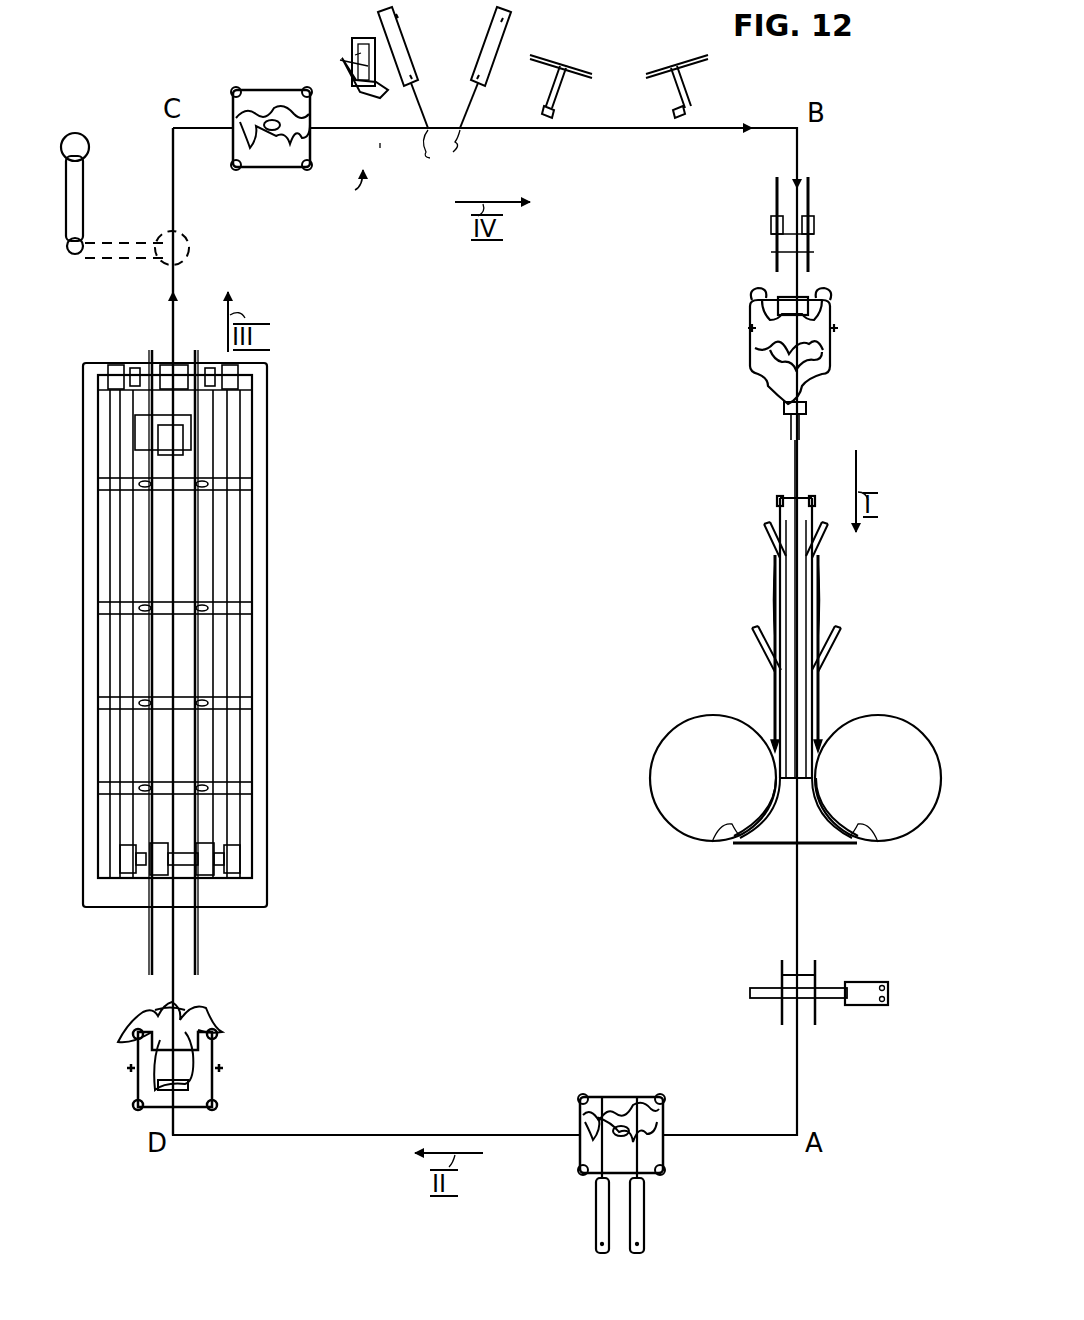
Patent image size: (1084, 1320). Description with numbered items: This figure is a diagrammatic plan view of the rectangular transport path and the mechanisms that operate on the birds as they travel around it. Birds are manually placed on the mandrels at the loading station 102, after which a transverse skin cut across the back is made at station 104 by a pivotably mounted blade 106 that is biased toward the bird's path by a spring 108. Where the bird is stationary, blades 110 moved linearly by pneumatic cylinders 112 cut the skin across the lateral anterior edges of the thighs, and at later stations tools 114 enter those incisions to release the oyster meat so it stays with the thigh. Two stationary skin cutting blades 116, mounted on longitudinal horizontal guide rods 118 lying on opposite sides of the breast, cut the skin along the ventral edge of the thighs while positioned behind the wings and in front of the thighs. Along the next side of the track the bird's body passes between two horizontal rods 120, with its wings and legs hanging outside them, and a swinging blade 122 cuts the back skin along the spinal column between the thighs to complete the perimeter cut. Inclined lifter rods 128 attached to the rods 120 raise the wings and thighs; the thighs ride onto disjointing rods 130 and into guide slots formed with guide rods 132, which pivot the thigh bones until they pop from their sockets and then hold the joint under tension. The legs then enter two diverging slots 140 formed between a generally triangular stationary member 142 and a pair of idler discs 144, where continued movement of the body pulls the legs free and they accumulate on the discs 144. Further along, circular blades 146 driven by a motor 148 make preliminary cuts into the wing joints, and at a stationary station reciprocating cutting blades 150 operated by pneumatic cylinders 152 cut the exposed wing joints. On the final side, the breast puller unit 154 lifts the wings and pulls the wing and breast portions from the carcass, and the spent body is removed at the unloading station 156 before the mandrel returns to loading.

The loading station 102 is at (248, 75).
The skin cutting station 104 is at (355, 174).
The pivotably mounted blade 106 is at (380, 100).
The spring 108 is at (356, 75).
The blades 110 is at (432, 158).
The pneumatic cylinders 112 is at (495, 32).
The tools 114 is at (550, 118).
The stationary skin cutting blades 116 is at (772, 224).
The longitudinal horizontal guide rods 118 is at (772, 251).
The horizontal rods 120 is at (781, 506).
The blade 122 is at (785, 420).
The lifter rods 128 is at (775, 611).
The disjointing rods 130 is at (756, 635).
The guide rods 132 is at (766, 534).
The slots 140 is at (868, 835).
The generally triangular stationary member 142 is at (826, 853).
The idler discs 144 is at (898, 744).
The circular blades 146 is at (782, 973).
The motor 148 is at (872, 983).
The reciprocating cutting blades 150 is at (620, 1096).
The pneumatic cylinders 152 is at (646, 1206).
The breast puller unit 154 is at (257, 705).
The unloading station 156 is at (205, 239).